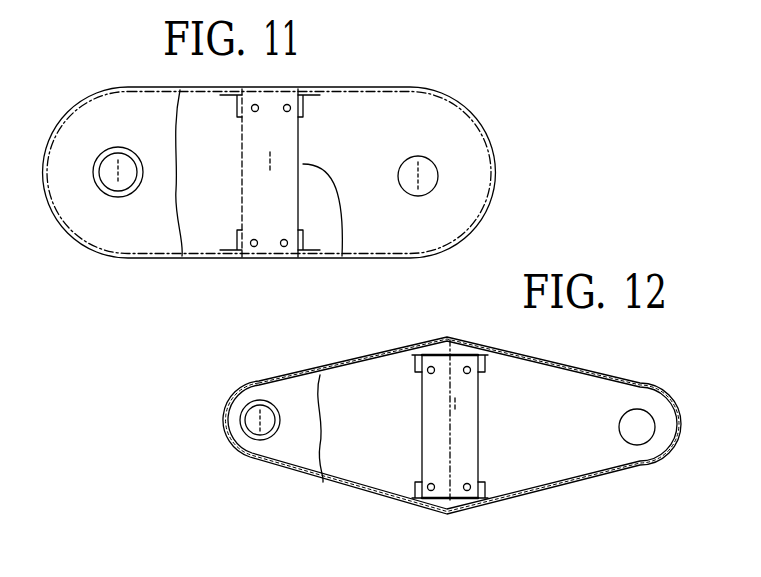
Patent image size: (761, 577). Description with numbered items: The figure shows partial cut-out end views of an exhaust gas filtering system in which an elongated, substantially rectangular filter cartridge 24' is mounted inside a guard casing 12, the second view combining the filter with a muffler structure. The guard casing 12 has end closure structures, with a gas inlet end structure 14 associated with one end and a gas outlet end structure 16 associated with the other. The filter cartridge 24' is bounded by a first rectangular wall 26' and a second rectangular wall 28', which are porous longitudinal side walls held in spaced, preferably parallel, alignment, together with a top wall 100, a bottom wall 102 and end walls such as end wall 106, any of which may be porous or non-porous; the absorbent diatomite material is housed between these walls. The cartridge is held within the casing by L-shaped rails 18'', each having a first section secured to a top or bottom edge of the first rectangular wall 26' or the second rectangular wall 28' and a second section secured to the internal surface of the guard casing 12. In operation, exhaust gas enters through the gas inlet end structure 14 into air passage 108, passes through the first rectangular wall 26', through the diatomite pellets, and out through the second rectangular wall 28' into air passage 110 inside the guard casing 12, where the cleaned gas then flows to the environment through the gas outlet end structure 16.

In FIG. 11, the guard casing 12 is at (85, 93).
In FIG. 12, the guard casing 12 is at (283, 471).
In FIG. 11, the gas inlet end structure 14 is at (437, 173).
In FIG. 12, the gas inlet end structure 14 is at (655, 416).
In FIG. 11, the gas outlet end structure 16 is at (107, 193).
In FIG. 12, the gas outlet end structure 16 is at (243, 432).
In FIG. 11, the rail 18'' is at (284, 178).
In FIG. 12, the rail 18'' is at (462, 427).
In FIG. 11, the filter cartridge 24' is at (336, 241).
In FIG. 12, the filter cartridge 24' is at (510, 490).
In FIG. 11, the first rectangular wall 26' is at (367, 237).
In FIG. 12, the first rectangular wall 26' is at (558, 477).
In FIG. 11, the second rectangular wall 28' is at (167, 247).
In FIG. 12, the second rectangular wall 28' is at (357, 479).
In FIG. 12, the top wall 100 is at (450, 353).
In FIG. 11, the bottom wall 102 is at (267, 263).
In FIG. 12, the bottom wall 102 is at (448, 492).
In FIG. 11, the end wall 106 is at (277, 162).
In FIG. 12, the end wall 106 is at (468, 405).
In FIG. 11, the air passage 108 is at (383, 168).
In FIG. 12, the air passage 108 is at (567, 446).
In FIG. 11, the air passage 110 is at (222, 165).
In FIG. 12, the air passage 110 is at (385, 433).